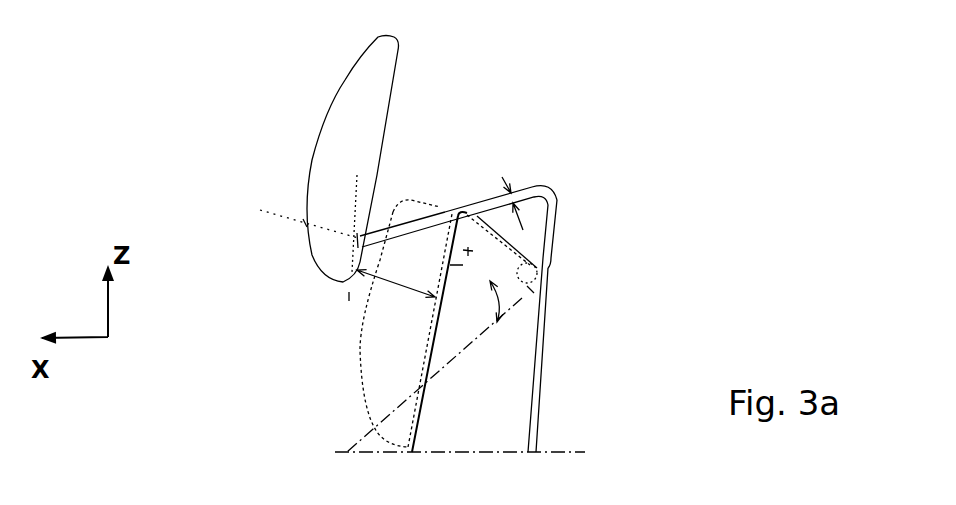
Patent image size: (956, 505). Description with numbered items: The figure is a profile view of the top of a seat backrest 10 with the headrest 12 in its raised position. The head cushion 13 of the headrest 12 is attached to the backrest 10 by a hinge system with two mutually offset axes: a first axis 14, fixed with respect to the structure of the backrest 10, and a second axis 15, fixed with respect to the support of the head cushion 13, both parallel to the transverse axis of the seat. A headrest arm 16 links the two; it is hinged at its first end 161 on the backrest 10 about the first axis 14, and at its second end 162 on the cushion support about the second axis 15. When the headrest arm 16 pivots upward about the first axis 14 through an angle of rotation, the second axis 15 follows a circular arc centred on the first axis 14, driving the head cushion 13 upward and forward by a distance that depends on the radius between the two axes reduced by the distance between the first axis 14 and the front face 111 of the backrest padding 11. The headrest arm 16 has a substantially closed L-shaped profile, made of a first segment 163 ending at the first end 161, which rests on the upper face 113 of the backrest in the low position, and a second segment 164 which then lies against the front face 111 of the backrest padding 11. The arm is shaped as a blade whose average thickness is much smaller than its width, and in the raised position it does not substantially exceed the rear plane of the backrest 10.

The backrest 10 is at (762, 236).
The backrest padding 11 is at (488, 405).
The headrest 12 is at (336, 67).
The head cushion 13 is at (333, 158).
The first axis 14 is at (531, 289).
The second axis 15 is at (356, 238).
The headrest arm 16 is at (556, 180).
The front face of the backrest padding 111 is at (430, 361).
The upper face of the backrest 113 is at (513, 247).
The first end of the headrest arm 161 is at (547, 267).
The second end of the headrest arm 162 is at (362, 240).
The first segment 163 is at (557, 227).
The second segment 164 is at (443, 212).